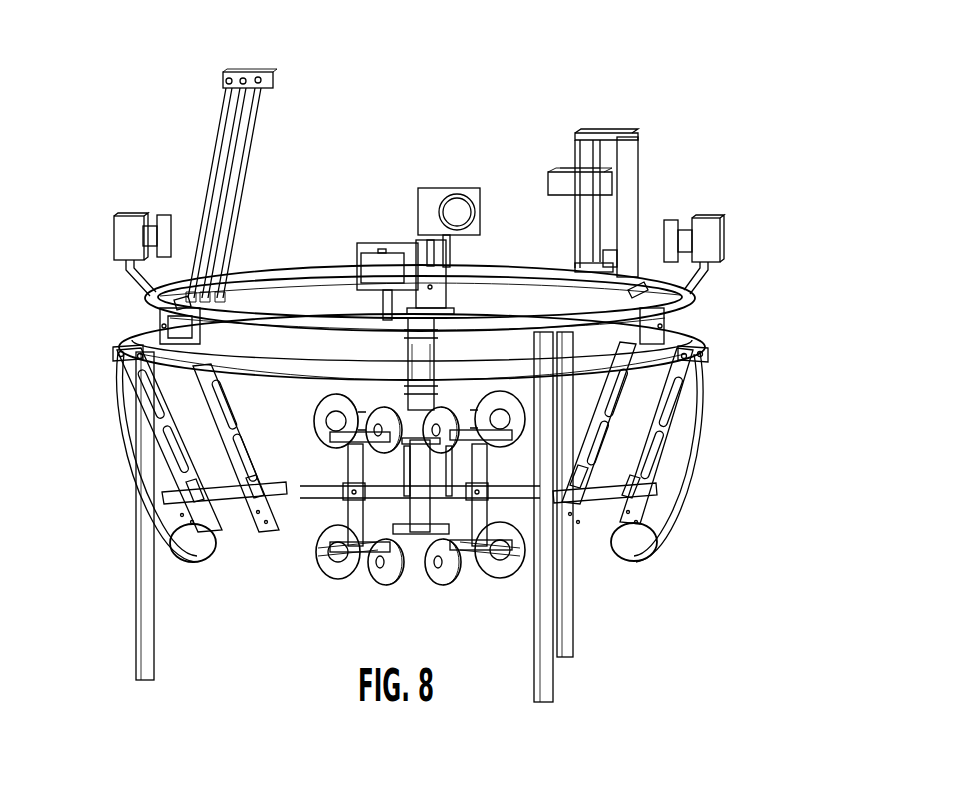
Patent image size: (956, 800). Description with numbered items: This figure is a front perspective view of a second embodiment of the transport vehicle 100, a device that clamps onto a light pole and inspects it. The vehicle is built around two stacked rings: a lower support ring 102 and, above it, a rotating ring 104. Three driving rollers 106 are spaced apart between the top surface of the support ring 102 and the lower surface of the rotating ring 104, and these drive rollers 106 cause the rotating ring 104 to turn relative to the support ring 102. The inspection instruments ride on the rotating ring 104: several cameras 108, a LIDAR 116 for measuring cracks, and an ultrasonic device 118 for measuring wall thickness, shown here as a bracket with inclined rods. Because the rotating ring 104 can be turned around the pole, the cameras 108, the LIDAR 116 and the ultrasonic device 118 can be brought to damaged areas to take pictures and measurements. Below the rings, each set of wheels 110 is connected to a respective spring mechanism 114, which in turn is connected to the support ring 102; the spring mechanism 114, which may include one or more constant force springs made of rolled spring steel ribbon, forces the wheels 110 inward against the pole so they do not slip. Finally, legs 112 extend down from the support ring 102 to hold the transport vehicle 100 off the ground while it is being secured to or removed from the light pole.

The transport vehicle 100 is at (578, 82).
The support ring 102 is at (307, 365).
The rotating ring 104 is at (482, 268).
The driving rollers 106 is at (116, 312).
The cameras 108 is at (128, 216).
The wheels 110 is at (330, 572).
The legs 112 is at (138, 664).
The spring mechanism 114 is at (172, 536).
The LIDAR 116 is at (622, 132).
The ultrasonic device 118 is at (224, 76).